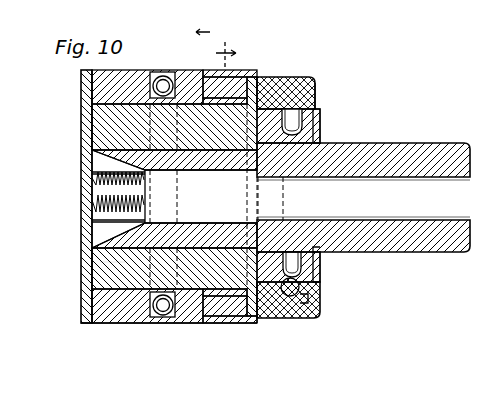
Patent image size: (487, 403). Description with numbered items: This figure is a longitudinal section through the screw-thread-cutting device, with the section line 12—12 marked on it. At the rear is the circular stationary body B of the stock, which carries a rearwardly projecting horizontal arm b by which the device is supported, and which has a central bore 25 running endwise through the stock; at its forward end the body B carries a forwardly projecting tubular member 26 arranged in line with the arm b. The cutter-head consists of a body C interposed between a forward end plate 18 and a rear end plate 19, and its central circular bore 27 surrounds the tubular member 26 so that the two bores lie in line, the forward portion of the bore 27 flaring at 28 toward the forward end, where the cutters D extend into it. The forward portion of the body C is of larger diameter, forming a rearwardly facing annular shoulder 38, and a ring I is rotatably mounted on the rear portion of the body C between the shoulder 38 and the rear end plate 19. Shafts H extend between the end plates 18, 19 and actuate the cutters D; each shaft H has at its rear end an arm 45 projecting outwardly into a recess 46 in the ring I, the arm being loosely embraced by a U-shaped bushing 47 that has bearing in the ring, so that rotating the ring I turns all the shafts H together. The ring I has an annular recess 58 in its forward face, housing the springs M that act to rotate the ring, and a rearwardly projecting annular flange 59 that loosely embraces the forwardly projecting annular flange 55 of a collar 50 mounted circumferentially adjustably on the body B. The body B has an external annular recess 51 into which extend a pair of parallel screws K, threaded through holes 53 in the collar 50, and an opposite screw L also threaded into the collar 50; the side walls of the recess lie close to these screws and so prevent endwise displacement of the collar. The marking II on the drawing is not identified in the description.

The section line 12— 12 is at (216, 96).
The forward end plate 18 is at (81, 90).
The rear end plate 19 is at (285, 78).
The bore 25 is at (322, 254).
The tubular member 26 is at (305, 197).
The circular bore 27 is at (192, 165).
The flaring forward end-portion 28 is at (108, 268).
The annular shoulder 38 is at (150, 75).
The arm 45 is at (263, 78).
The recess 46 is at (204, 76).
The bushing 47 is at (237, 71).
The collar 50 is at (321, 280).
The external annular recess 51 is at (305, 120).
The screw-threaded holes 53 is at (302, 321).
The annular flange 55 is at (258, 77).
The annular recess 58 is at (158, 72).
The annular flange 59 is at (256, 320).
The shaft H is at (100, 118).
The spring M is at (93, 97).
The ring I is at (205, 70).
The cutter D is at (92, 180).
The lower spring II is at (93, 205).
The body of the cutter-head C is at (125, 320).
The screw L is at (314, 86).
The body of the stock B is at (321, 125).
The screws K is at (300, 305).
The arm b is at (363, 187).